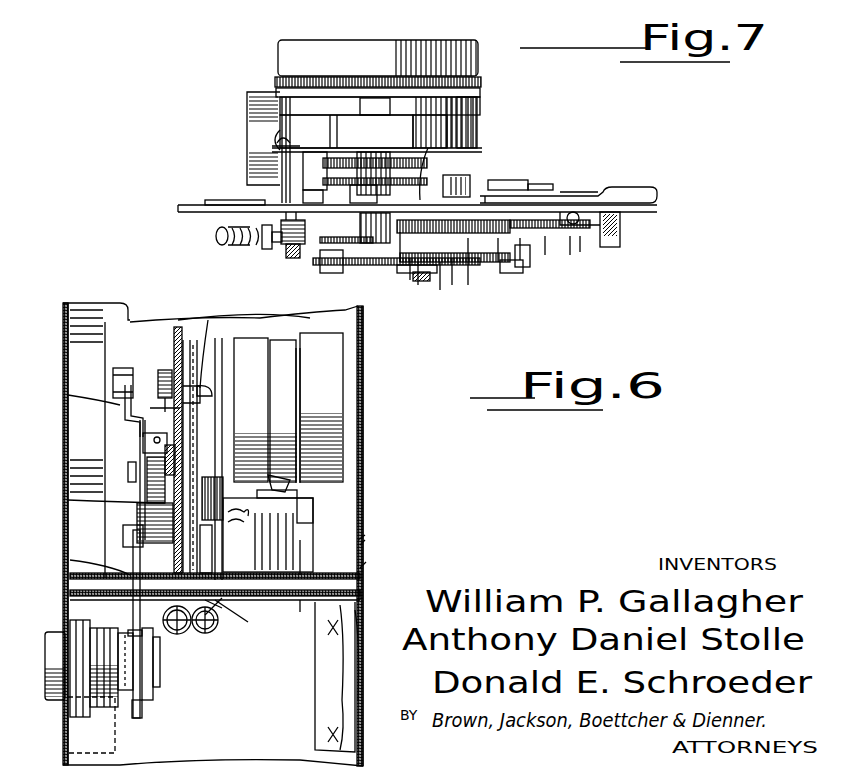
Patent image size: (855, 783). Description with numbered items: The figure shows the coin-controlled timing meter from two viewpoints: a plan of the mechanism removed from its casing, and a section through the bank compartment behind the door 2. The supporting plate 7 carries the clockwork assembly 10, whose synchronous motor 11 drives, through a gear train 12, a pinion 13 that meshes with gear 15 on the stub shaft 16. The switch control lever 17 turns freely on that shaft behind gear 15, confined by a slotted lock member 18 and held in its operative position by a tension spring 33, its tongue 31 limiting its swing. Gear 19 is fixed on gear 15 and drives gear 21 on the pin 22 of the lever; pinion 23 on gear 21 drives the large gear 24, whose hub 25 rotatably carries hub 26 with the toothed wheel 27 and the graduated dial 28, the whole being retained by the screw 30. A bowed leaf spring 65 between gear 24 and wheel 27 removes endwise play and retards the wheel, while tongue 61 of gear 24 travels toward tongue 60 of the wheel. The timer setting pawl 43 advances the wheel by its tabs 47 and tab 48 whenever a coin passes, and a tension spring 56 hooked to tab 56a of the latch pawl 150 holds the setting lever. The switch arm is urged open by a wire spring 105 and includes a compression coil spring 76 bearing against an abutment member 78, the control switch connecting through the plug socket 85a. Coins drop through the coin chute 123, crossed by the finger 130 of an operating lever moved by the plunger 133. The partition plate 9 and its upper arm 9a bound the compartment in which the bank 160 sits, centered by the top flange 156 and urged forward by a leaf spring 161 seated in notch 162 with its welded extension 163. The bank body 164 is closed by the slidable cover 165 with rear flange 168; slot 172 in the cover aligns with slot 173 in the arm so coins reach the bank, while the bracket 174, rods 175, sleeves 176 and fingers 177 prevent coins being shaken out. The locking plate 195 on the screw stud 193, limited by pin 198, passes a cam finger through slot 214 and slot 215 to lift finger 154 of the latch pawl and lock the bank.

In FIG. 6, the door 2 is at (62, 353).
In FIG. 7, the supporting plate 7 is at (185, 207).
In FIG. 6, the supporting plate 7 is at (178, 337).
In FIG. 6, the partition plate 9 is at (300, 575).
In FIG. 6, the upper arm of partition member 9a is at (362, 550).
In FIG. 7, the clockwork assembly 10 is at (273, 172).
In FIG. 7, the synchronous motor 11 is at (358, 52).
In FIG. 6, the synchronous motor 11 is at (335, 446).
In FIG. 7, the gear train 12 is at (335, 166).
In FIG. 7, the pinion 13 is at (360, 222).
In FIG. 7, the gear 15 is at (470, 288).
In FIG. 7, the stub shaft 16 is at (422, 150).
In FIG. 7, the switch control lever 17 is at (582, 185).
In FIG. 7, the slotted lock member 18 is at (452, 136).
In FIG. 7, the gear 19 is at (385, 265).
In FIG. 7, the gear 21 is at (572, 257).
In FIG. 7, the pin 22 is at (583, 255).
In FIG. 7, the pinion 23 is at (548, 258).
In FIG. 7, the gear 24 is at (522, 262).
In FIG. 7, the hub 25 is at (455, 288).
In FIG. 7, the hub 26 is at (403, 270).
In FIG. 7, the toothed wheel 27 is at (500, 265).
In FIG. 7, the dial 28 is at (346, 265).
In FIG. 7, the screw 30 is at (425, 300).
In FIG. 7, the tongue 31 is at (554, 182).
In FIG. 7, the tension spring 33 is at (595, 245).
In FIG. 7, the timer setting pawl 43 is at (472, 272).
In FIG. 7, the tabs 47 is at (508, 270).
In FIG. 6, the tabs 47 is at (122, 368).
In FIG. 7, the tab 48 is at (244, 304).
In FIG. 6, the tension spring 56 is at (146, 478).
In FIG. 6, the tab 56a is at (143, 440).
In FIG. 7, the tongue 60 is at (442, 292).
In FIG. 7, the tongue 61 is at (418, 287).
In FIG. 7, the bowed leaf spring 65 is at (410, 282).
In FIG. 7, the compression coil spring 76 is at (245, 246).
In FIG. 7, the abutment member 78 is at (222, 243).
In FIG. 6, the electrical connecting device 85a is at (300, 537).
In FIG. 7, the wire spring 105 is at (281, 252).
In FIG. 6, the coin chute 123 is at (207, 544).
In FIG. 6, the finger 130 is at (208, 320).
In FIG. 7, the operating rod or plunger 133 is at (478, 182).
In FIG. 6, the latch pawl 150 is at (70, 398).
In FIG. 6, the finger 154 is at (123, 540).
In FIG. 6, the top flange 156 is at (90, 578).
In FIG. 6, the bank 160 is at (65, 750).
In FIG. 6, the leaf spring 161 is at (362, 595).
In FIG. 6, the notch 162 is at (362, 580).
In FIG. 6, the extension 163 is at (360, 530).
In FIG. 6, the body 164 is at (312, 737).
In FIG. 6, the cover 165 is at (318, 600).
In FIG. 6, the flange 168 is at (362, 616).
In FIG. 6, the slot 172 is at (205, 634).
In FIG. 6, the slot 173 is at (205, 575).
In FIG. 6, the bracket 174 is at (240, 604).
In FIG. 6, the rods 175 is at (178, 634).
In FIG. 6, the sleeves 176 is at (215, 640).
In FIG. 6, the fingers 177 is at (230, 628).
In FIG. 6, the screw stud 193 is at (154, 688).
In FIG. 6, the locking plate 195 is at (138, 718).
In FIG. 6, the pin 198 is at (130, 632).
In FIG. 6, the slot 214 is at (82, 598).
In FIG. 6, the slot 215 is at (72, 563).